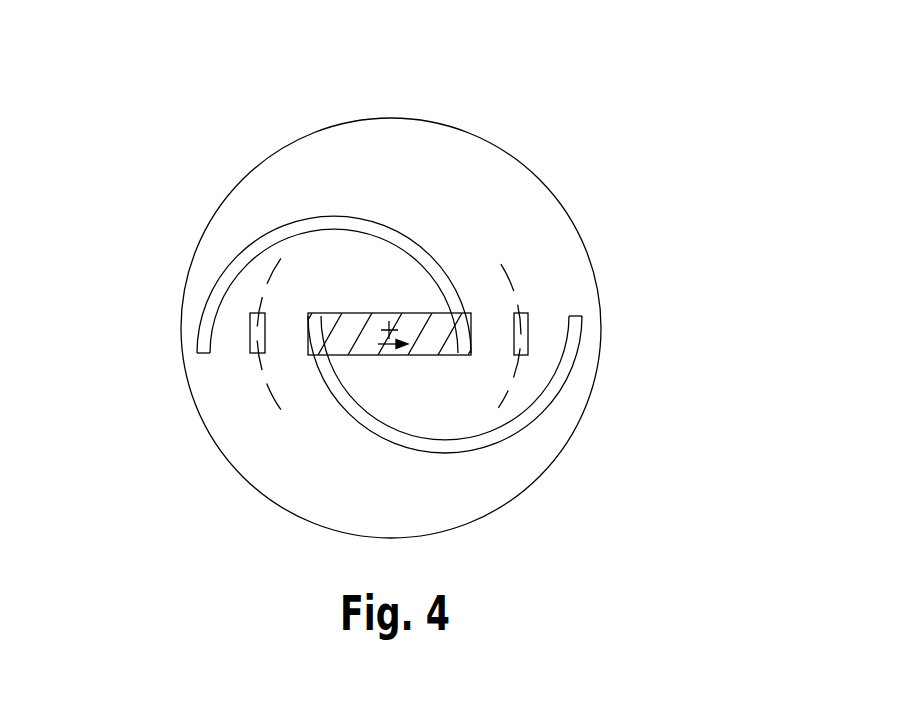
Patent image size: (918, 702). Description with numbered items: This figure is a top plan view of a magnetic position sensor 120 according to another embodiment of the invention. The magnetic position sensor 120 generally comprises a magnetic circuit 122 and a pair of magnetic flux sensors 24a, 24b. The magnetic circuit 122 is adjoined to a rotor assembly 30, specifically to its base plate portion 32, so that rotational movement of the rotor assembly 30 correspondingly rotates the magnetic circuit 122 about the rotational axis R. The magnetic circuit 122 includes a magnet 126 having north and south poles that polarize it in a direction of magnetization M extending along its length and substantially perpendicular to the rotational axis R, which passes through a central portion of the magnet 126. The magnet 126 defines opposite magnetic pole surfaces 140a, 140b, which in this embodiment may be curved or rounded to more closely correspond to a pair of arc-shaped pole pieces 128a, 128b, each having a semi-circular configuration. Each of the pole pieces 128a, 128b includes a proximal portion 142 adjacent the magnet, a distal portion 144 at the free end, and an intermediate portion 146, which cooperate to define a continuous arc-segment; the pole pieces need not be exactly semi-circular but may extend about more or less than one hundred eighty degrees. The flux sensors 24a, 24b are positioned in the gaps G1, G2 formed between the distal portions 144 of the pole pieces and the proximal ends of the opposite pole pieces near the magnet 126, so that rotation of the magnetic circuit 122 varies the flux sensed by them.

The magnetic position sensor 120 is at (472, 53).
The magnetic circuit 122 is at (432, 180).
The magnet 126 is at (404, 302).
The arc-shaped pole piece 128a is at (333, 144).
The arc-shaped pole piece 128b is at (474, 500).
The rotor assembly 30 is at (560, 464).
The base plate portion 32 is at (477, 172).
The magnetic pole surface 140a is at (441, 338).
The magnetic pole surface 140b is at (311, 313).
The proximal portion 142 is at (460, 320).
The distal portion 144 is at (575, 333).
The intermediate portion 146 is at (293, 235).
The magnetic flux sensor 24a is at (240, 355).
The magnetic flux sensor 24b is at (539, 300).
The rotational axis R is at (388, 327).
The direction of magnetization M is at (393, 356).
The first gap G1 is at (290, 332).
The second gap G2 is at (491, 332).